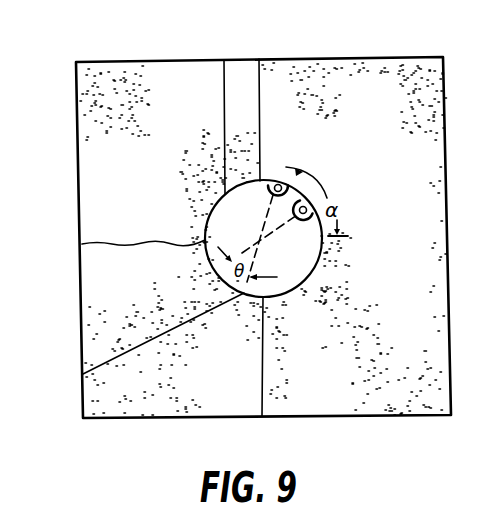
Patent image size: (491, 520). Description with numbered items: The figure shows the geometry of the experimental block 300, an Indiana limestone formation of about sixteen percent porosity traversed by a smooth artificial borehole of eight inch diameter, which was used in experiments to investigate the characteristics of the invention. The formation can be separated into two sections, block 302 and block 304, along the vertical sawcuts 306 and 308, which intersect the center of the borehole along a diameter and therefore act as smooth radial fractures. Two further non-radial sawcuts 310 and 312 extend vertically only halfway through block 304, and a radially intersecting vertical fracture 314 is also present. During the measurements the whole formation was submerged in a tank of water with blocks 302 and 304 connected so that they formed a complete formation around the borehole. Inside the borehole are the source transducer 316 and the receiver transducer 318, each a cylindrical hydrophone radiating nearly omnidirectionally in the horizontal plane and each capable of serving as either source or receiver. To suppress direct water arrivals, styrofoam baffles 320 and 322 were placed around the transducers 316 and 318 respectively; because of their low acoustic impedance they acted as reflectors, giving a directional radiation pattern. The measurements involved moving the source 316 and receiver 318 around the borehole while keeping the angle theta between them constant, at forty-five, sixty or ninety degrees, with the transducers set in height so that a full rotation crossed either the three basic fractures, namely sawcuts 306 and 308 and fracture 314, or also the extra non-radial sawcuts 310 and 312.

The experimental block 300 is at (146, 51).
The block 302 is at (384, 117).
The block 304 is at (174, 121).
The vertical sawcut 306 is at (262, 62).
The vertical sawcut 308 is at (265, 405).
The non-radial sawcut 310 is at (225, 61).
The non-radial sawcut 312 is at (83, 374).
The radially intersecting vertical fracture 314 is at (82, 245).
The source transducer 316 is at (277, 184).
The receiver transducer 318 is at (310, 208).
The baffle 320 is at (266, 196).
The baffle 322 is at (300, 220).